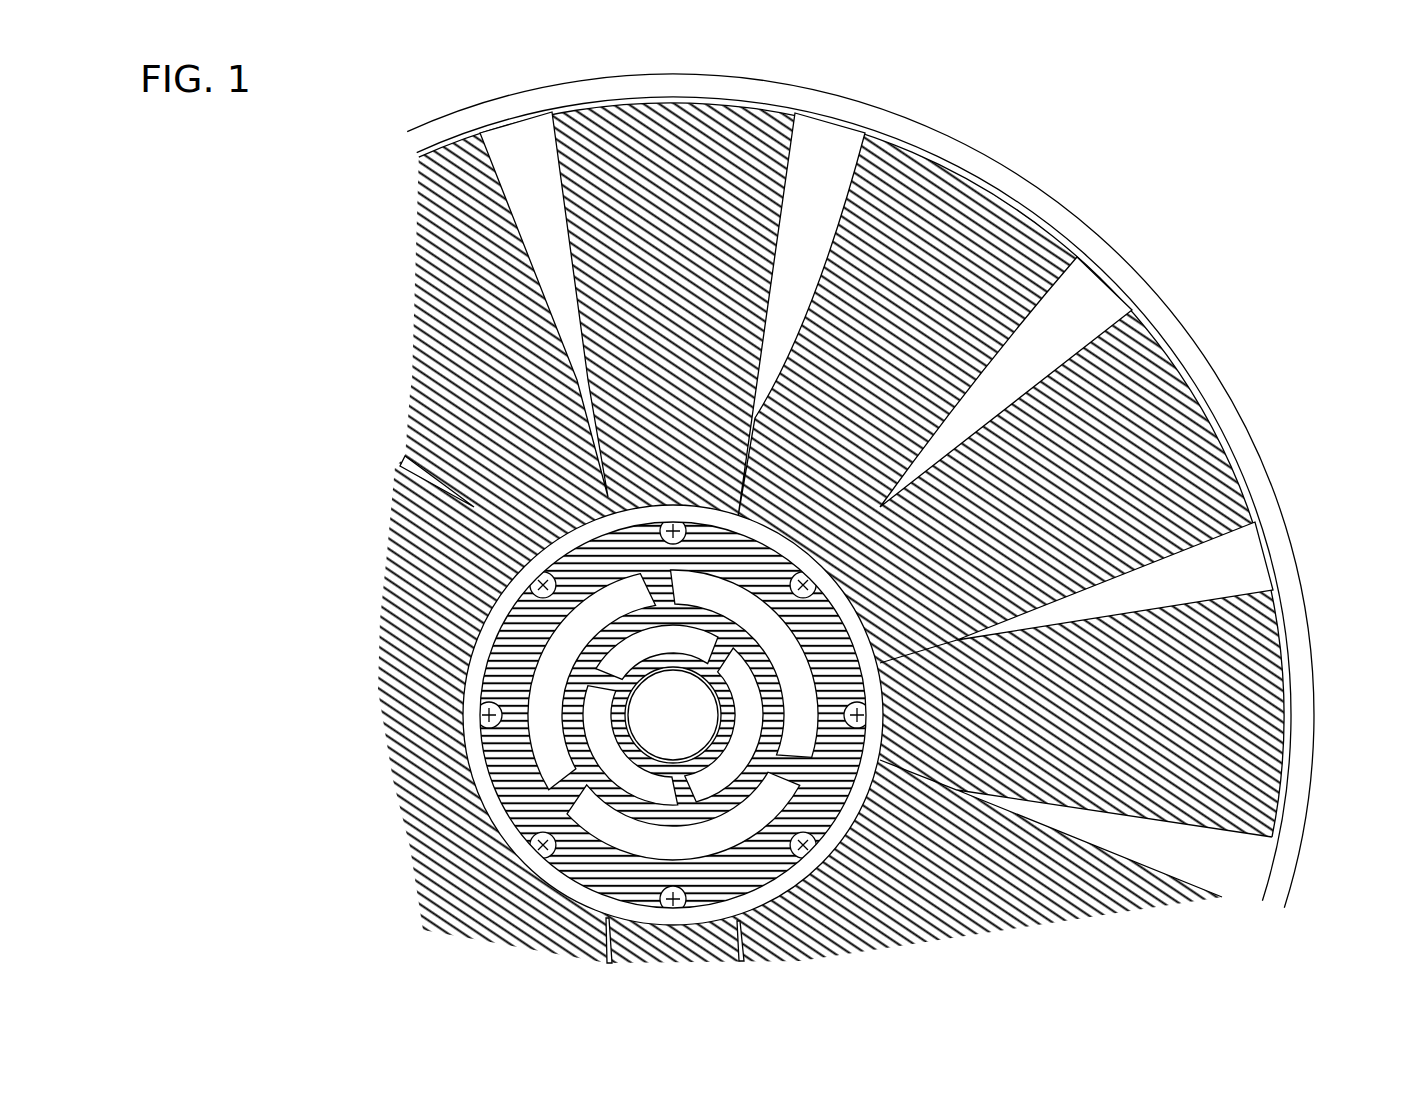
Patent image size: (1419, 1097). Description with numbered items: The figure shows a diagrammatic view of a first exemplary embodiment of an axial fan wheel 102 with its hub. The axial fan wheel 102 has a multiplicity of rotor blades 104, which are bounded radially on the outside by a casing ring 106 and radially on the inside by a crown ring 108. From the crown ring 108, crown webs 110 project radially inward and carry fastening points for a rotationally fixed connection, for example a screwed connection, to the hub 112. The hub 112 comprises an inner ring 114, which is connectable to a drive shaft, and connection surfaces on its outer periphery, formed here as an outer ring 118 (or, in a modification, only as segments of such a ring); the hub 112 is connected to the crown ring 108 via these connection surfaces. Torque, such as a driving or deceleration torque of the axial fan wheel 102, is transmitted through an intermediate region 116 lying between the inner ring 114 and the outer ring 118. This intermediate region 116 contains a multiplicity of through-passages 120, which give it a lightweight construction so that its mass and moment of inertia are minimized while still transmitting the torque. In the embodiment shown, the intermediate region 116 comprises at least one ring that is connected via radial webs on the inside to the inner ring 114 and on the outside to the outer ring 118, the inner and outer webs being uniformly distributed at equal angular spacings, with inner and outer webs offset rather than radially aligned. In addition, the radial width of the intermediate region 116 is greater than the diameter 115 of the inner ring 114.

The axial fan wheel 102 is at (1266, 226).
The rotor blades 104 is at (483, 403).
The casing ring 106 is at (1247, 460).
The crown ring 108 is at (477, 696).
The crown webs 110 is at (527, 590).
The hub 112 is at (493, 637).
The inner ring 114 is at (710, 757).
The diameter 115 is at (693, 678).
The intermediate region 116 is at (743, 588).
The outer ring 118 is at (550, 747).
The through-passages 120 is at (603, 762).